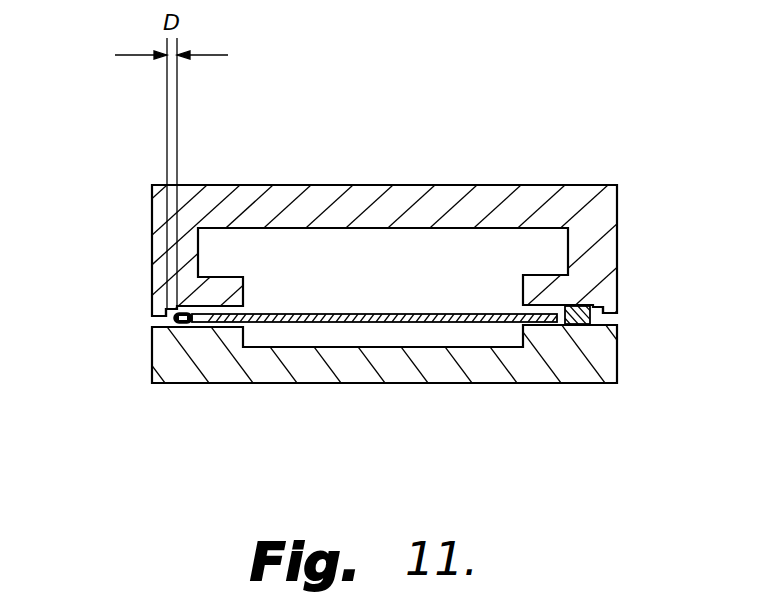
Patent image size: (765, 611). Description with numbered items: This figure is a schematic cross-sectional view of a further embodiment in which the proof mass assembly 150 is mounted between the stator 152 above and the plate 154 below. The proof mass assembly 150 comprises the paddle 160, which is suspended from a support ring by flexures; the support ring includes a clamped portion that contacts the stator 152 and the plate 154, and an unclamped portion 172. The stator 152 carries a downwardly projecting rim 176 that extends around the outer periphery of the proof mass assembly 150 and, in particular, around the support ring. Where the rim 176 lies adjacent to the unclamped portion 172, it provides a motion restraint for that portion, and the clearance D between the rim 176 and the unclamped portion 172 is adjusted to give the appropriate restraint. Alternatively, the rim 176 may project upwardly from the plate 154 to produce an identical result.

The proof mass assembly 150 is at (305, 338).
The stator 152 is at (498, 190).
The plate 154 is at (565, 368).
The paddle 160 is at (371, 312).
The unclamped portion 172 is at (178, 319).
The rim 176 is at (152, 312).